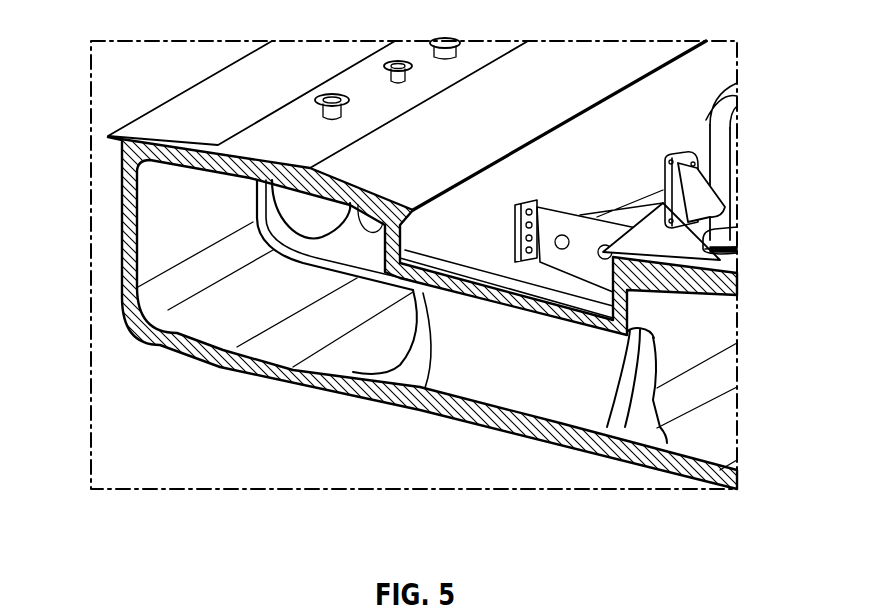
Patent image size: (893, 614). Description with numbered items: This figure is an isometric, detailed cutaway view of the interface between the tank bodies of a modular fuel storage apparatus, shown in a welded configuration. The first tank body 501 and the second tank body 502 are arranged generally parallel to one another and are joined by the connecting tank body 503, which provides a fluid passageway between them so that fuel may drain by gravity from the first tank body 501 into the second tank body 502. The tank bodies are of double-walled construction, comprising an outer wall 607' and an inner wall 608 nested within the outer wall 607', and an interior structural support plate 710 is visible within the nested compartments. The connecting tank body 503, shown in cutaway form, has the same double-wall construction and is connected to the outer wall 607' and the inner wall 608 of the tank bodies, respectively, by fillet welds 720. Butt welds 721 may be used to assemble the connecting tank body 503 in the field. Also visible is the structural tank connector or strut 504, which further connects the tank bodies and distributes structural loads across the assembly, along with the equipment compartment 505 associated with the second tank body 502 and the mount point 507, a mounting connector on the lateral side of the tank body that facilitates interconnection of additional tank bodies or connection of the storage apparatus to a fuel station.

The first tank body 501 is at (108, 277).
The second tank body 502 is at (672, 491).
The connecting tank body 503 is at (477, 377).
The structural tank connector/strut 504 is at (597, 217).
The equipment compartment 505 is at (723, 162).
The mount point 507 is at (532, 203).
The outer wall 607' is at (374, 105).
The inner wall 608 is at (150, 292).
The interior structural support plate 710 is at (315, 253).
The fillet weld 720 is at (420, 227).
The butt weld 721 is at (527, 223).